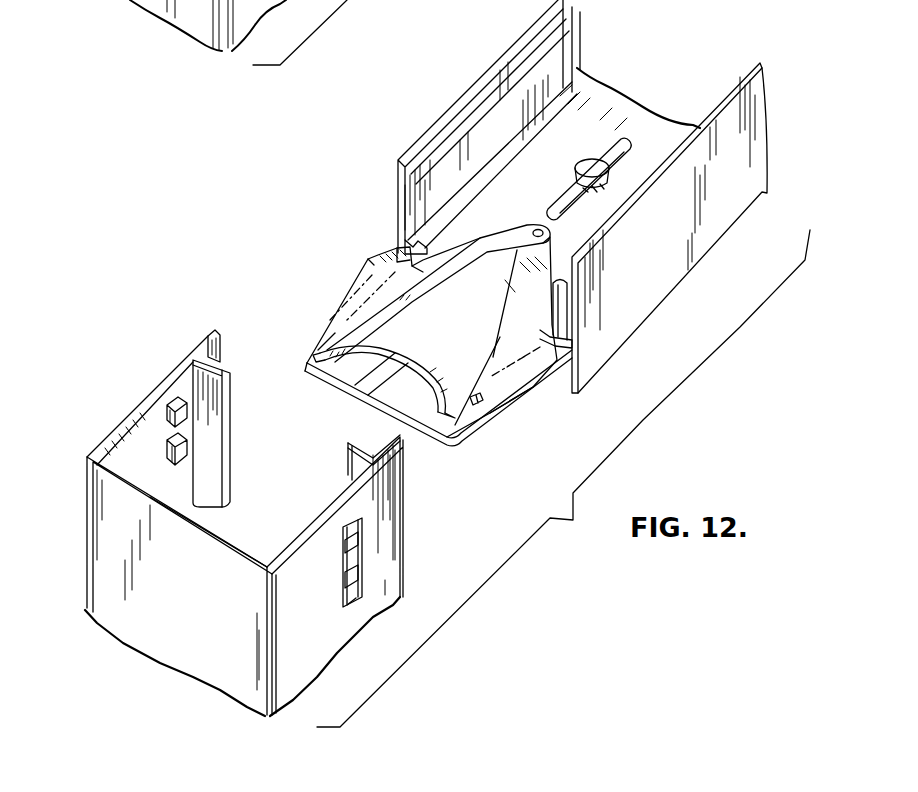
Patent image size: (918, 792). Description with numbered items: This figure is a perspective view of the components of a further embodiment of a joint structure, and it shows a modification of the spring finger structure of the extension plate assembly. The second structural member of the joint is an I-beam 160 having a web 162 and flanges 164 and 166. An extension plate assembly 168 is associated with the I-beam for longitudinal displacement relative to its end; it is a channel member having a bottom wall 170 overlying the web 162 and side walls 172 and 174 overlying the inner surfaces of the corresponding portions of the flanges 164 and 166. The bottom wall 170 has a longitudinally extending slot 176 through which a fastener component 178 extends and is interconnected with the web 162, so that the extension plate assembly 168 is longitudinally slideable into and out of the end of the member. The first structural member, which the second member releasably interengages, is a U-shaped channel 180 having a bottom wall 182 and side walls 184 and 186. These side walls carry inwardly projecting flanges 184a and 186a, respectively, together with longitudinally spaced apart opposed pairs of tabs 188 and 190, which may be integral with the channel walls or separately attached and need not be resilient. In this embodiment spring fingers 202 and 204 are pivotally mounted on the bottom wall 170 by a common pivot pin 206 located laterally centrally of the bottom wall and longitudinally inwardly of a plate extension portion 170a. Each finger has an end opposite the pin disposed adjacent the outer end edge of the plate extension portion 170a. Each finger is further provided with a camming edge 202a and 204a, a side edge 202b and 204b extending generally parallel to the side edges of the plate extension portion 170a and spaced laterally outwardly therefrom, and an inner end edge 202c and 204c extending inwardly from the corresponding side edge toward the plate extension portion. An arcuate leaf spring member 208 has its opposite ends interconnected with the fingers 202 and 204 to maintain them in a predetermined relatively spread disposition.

The I-beam 160 is at (452, 98).
The web 162 is at (593, 92).
The flange 164 is at (510, 53).
The flange 166 is at (757, 93).
The extension plate assembly 168 is at (357, 258).
The bottom wall 170 is at (593, 125).
The plate extension portion 170a is at (383, 400).
The side wall 172 is at (552, 60).
The side wall 174 is at (560, 298).
The slot 176 is at (560, 203).
The knob 178 is at (573, 170).
The U-shaped channel 180 is at (158, 378).
The bottom wall 182 is at (233, 552).
The side wall 184 is at (120, 417).
The inwardly projecting flange 184a is at (207, 331).
The side wall 186 is at (360, 480).
The inwardly projecting flange 186a is at (350, 457).
The tabs 188 is at (167, 420).
The tabs 190 is at (350, 577).
The spring finger 202 is at (353, 300).
The camming edge 202a is at (330, 323).
The side edge 202b is at (357, 272).
The inner end edge 202c is at (384, 253).
The spring finger 204 is at (556, 445).
The camming edge 204a is at (505, 392).
The side edge 204b is at (537, 390).
The inner end edge 204c is at (560, 355).
The pivot pin 206 is at (548, 231).
The arcuate leaf spring member 208 is at (390, 352).